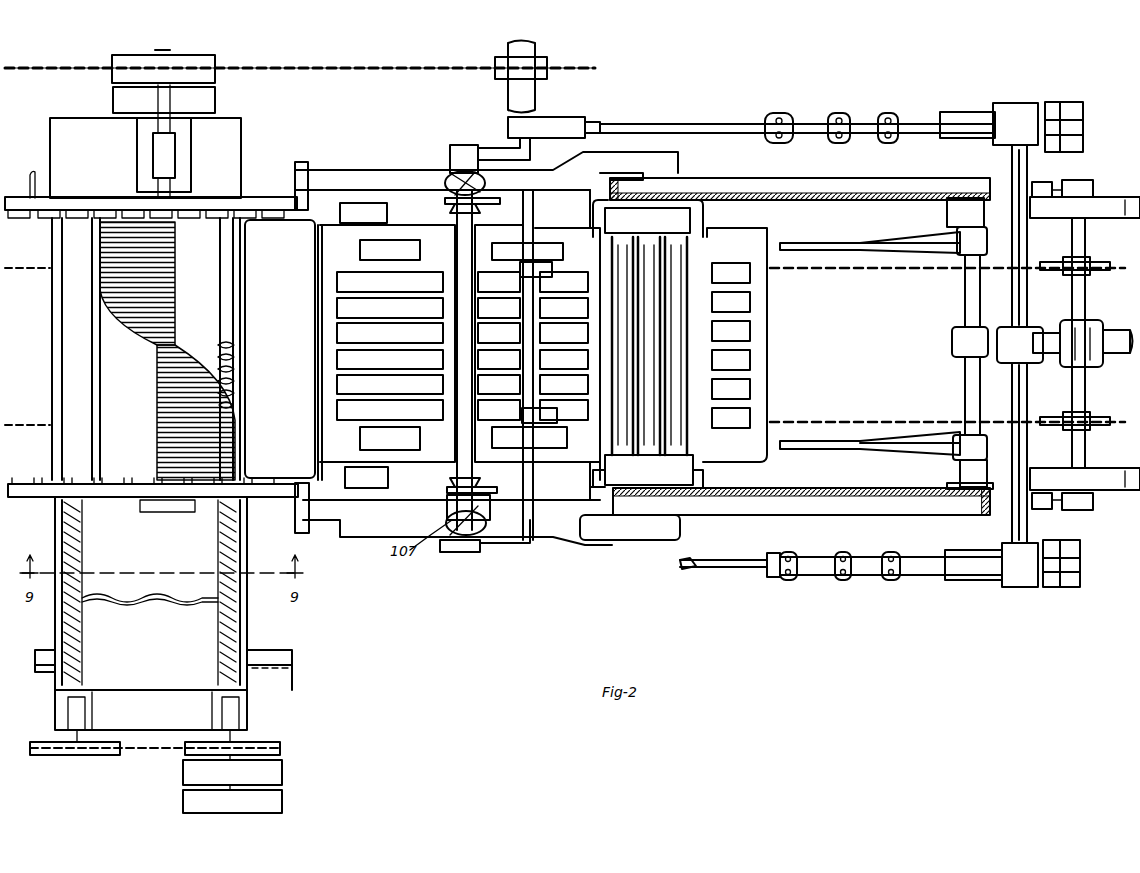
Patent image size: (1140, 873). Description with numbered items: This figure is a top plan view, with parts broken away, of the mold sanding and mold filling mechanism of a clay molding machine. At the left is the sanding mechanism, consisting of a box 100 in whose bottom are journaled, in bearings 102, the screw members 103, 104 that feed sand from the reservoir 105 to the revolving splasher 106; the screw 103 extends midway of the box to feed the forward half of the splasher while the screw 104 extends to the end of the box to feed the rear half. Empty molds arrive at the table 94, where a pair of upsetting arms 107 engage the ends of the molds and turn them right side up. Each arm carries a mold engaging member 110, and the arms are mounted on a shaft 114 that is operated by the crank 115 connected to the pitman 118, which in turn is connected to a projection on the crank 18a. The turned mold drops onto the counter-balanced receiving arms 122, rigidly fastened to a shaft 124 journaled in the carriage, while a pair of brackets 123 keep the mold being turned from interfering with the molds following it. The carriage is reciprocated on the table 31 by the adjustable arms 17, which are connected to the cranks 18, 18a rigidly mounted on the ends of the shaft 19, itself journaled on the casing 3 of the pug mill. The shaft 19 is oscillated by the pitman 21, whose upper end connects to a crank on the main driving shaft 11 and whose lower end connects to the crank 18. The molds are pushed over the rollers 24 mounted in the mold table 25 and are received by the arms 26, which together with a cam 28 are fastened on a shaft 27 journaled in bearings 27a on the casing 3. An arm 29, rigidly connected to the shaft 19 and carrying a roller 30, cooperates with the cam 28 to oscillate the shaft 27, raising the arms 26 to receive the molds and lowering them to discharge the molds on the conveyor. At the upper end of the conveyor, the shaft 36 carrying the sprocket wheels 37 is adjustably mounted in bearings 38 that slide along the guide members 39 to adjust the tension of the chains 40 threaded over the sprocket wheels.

The casing 3 is at (966, 180).
The main driving shaft 11 is at (540, 95).
The adjustable arms 17 is at (692, 568).
The crank 18 is at (1058, 588).
The crank 18a is at (1066, 118).
The shaft 19 is at (1015, 295).
The pitman 21 is at (875, 572).
The rollers 24 is at (628, 448).
The mold table 25 is at (665, 214).
The arms 26 is at (810, 243).
The shaft 27 is at (965, 306).
The bearings 27a is at (962, 213).
The cam 28 is at (1112, 333).
The arm 29 is at (1050, 353).
The roller 30 is at (1098, 364).
The table 31 is at (570, 245).
The shaft 36 is at (1085, 297).
The sprocket wheels 37 is at (1095, 262).
The bearings 38 is at (1082, 180).
The guide members 39 is at (1110, 206).
The chains 40 is at (842, 272).
The table 94 is at (267, 349).
The box 100 is at (143, 349).
The bearings 102 is at (228, 712).
The screw member 103 is at (220, 628).
The screw member 104 is at (82, 632).
The reservoir 105 is at (151, 593).
The revolving splasher 106 is at (175, 345).
The upsetting arms 107 is at (450, 175).
The mold engaging member 110 is at (468, 210).
The shaft 114 is at (462, 425).
The crank 115 is at (492, 150).
The pitman 118 is at (708, 125).
The counter-balanced receiving arms 122 is at (552, 270).
The brackets 123 is at (345, 225).
The shaft 124 is at (535, 480).